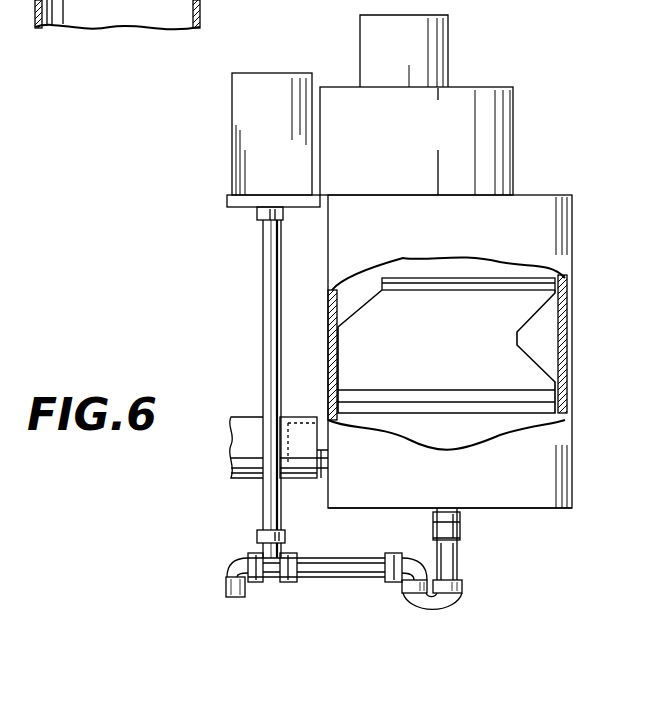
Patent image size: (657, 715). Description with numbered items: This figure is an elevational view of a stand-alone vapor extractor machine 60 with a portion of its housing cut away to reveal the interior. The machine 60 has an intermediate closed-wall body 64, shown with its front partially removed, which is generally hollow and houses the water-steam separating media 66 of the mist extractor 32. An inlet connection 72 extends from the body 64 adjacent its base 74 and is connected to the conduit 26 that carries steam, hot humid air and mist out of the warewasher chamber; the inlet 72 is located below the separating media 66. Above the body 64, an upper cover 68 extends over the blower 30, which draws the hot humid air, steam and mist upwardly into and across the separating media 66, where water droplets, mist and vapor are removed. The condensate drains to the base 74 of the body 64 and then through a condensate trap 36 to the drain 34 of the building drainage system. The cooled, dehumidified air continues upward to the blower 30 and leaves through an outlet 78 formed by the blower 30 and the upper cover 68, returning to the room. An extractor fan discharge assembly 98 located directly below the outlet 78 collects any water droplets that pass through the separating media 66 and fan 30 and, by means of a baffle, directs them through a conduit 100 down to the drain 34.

The conduit 26 is at (247, 416).
The blower 30 is at (485, 95).
The mist extractor 32 is at (453, 353).
The drain 34 is at (232, 600).
The condensate trap 36 is at (430, 608).
The vapor extractor machine 60 is at (240, 300).
The intermediate closed-wall body 64 is at (460, 238).
The water-steam separating media 66 is at (432, 375).
The upper cover 68 is at (418, 151).
The inlet connection 72 is at (323, 473).
The base 74 is at (506, 508).
The outlet 78 is at (272, 80).
The extractor fan discharge assembly 98 is at (243, 140).
The conduit 100 is at (267, 327).